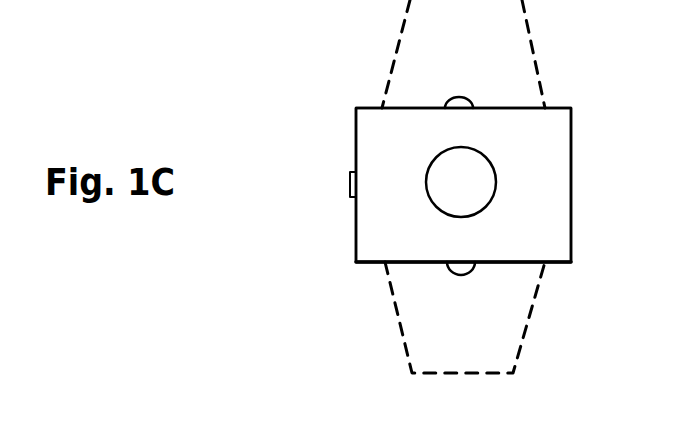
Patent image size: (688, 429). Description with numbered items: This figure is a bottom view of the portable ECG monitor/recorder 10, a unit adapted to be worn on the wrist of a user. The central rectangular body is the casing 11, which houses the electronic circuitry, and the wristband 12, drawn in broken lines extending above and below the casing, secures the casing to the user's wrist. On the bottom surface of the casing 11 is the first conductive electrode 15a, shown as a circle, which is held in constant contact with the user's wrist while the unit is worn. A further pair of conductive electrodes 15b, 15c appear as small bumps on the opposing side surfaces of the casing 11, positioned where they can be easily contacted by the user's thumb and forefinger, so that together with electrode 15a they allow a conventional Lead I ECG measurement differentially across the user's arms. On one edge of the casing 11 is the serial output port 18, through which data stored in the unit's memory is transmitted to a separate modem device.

The portable ECG monitor/recorder 10 is at (344, 90).
The casing 11 is at (571, 237).
The wristband 12 is at (530, 305).
The first conductive electrode 15a is at (495, 172).
The conductive electrode 15b is at (462, 276).
The conductive electrode 15c is at (459, 98).
The serial output port 18 is at (350, 187).